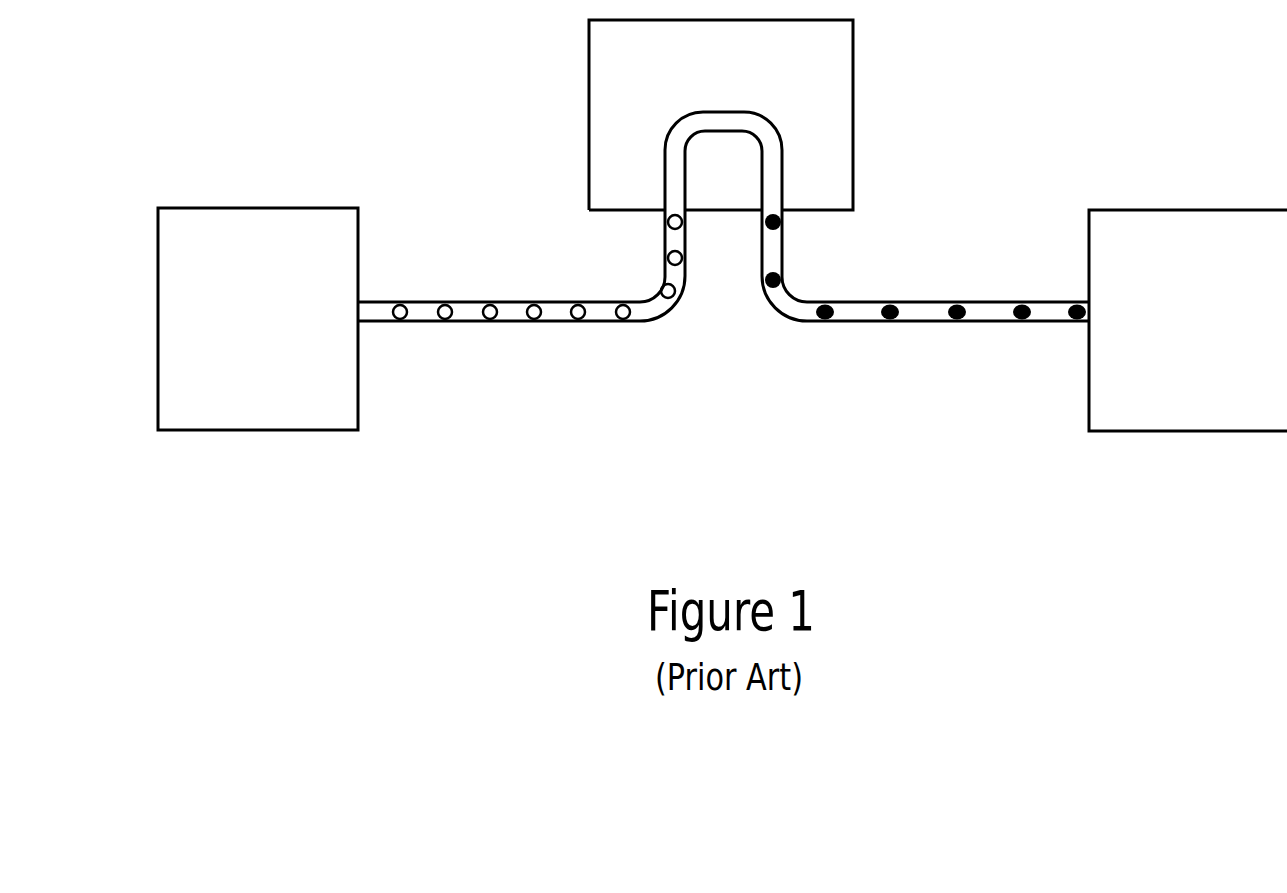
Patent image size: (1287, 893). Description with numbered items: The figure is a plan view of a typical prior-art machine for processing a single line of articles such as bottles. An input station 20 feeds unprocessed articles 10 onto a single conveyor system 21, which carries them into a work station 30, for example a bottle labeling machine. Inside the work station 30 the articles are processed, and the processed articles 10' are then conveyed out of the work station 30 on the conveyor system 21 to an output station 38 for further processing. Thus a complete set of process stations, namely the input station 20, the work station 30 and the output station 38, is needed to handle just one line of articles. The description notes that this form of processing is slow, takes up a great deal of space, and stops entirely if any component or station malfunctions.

The unprocessed articles 10 is at (537, 337).
The processed articles 10' is at (925, 336).
The input station 20 is at (275, 416).
The conveyor system 21 is at (508, 320).
The work station 30 is at (833, 58).
The output station 38 is at (1206, 407).